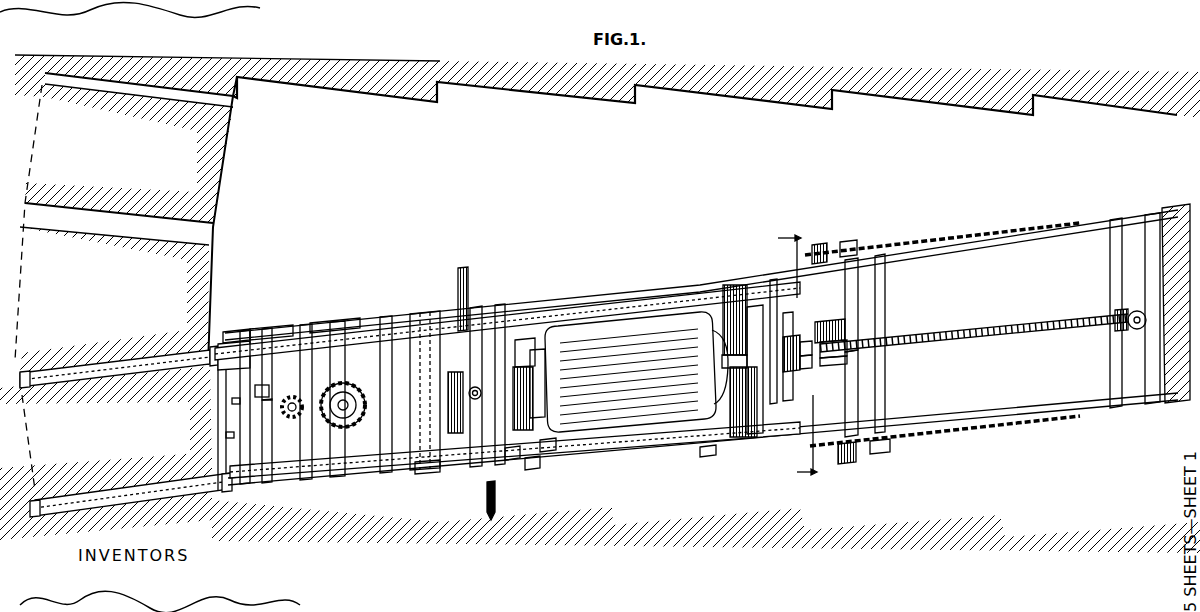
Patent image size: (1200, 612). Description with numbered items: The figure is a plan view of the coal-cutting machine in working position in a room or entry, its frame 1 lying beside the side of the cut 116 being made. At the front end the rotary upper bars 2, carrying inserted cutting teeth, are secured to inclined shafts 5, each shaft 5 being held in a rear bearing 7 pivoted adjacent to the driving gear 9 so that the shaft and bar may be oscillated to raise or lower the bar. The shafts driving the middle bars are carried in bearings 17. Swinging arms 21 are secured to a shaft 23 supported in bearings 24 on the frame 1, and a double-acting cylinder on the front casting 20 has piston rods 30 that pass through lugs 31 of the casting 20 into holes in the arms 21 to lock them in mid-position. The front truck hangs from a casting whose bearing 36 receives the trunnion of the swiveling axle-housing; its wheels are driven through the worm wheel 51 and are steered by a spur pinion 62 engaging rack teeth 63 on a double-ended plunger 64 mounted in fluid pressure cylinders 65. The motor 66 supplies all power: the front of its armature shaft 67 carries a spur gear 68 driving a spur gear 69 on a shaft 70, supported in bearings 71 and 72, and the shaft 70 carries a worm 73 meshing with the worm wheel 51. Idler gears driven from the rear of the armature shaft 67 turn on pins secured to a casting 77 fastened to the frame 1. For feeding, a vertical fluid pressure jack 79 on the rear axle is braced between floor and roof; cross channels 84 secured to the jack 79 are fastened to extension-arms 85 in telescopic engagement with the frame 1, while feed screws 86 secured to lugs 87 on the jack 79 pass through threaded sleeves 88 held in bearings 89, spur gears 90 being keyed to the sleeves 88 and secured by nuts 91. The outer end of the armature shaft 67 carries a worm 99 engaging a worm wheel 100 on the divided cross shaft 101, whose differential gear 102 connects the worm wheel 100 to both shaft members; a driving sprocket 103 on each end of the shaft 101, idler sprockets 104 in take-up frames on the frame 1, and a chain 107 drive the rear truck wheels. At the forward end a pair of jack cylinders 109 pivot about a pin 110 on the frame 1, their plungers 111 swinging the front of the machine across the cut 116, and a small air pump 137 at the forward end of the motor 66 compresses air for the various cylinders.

The frame 1 is at (672, 290).
The upper bars 2 is at (790, 358).
The inclined shaft 5 is at (565, 312).
The rear bearing 7 is at (755, 305).
The driving gear 9 is at (730, 286).
The bearings 17 is at (712, 447).
The front casting 20 is at (238, 418).
The swinging arms 21 is at (282, 365).
The bracket 23 is at (425, 472).
The bearings 24 is at (388, 360).
The piston rods 30 is at (232, 401).
The lugs 31 is at (222, 388).
The bearing 36 is at (226, 435).
The worm wheel 51 is at (347, 357).
The spur pinion 62 is at (312, 467).
The rack teeth 63 is at (265, 410).
The double-ended plunger 64 is at (258, 388).
The fluid pressure cylinders 65 is at (306, 365).
The motor 66 is at (629, 372).
The armature shaft 67 is at (530, 362).
The spur gear 68 is at (527, 338).
The spur gear 69 is at (548, 452).
The shaft 70 is at (514, 460).
The bearing 71 is at (534, 470).
The bearing 72 is at (330, 475).
The worm 73 is at (348, 430).
The casting 77 is at (793, 372).
The vertical fluid pressure jack 79 is at (1132, 326).
The cross channels 84 is at (1125, 287).
The extension-arms 85 is at (1043, 241).
The feed screws 86 is at (984, 336).
The lugs 87 is at (1128, 316).
The threaded sleeves 88 is at (785, 337).
The bearings 89 is at (800, 357).
The spur gears 90 is at (838, 318).
The nuts 91 is at (872, 352).
The worm 99 is at (870, 340).
The worm wheel 100 is at (872, 354).
The cross shaft 101 is at (856, 420).
The differential gear 102 is at (866, 325).
The driving sprocket 103 is at (822, 246).
The idler sprockets 104 is at (857, 252).
The chain 107 is at (958, 240).
The jack cylinders 109 is at (478, 330).
The pin 110 is at (455, 300).
The plunger 111 is at (492, 298).
The cut 116 is at (790, 530).
The small air pump 137 is at (432, 385).